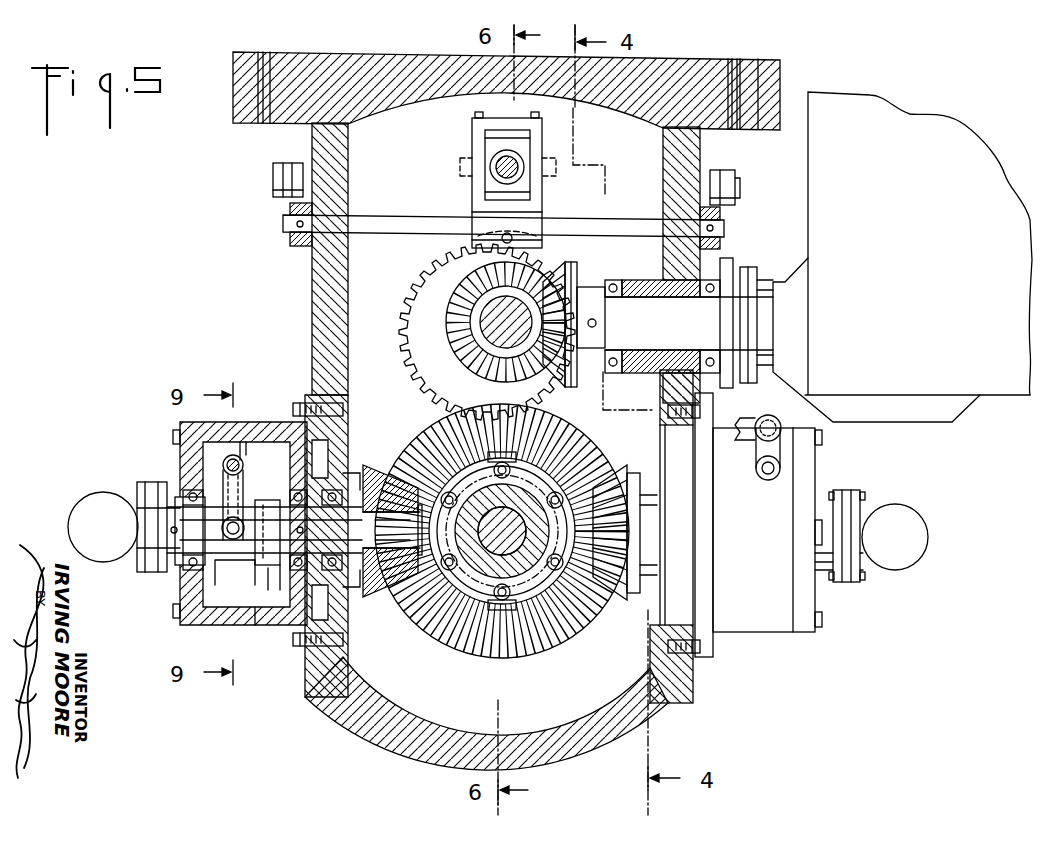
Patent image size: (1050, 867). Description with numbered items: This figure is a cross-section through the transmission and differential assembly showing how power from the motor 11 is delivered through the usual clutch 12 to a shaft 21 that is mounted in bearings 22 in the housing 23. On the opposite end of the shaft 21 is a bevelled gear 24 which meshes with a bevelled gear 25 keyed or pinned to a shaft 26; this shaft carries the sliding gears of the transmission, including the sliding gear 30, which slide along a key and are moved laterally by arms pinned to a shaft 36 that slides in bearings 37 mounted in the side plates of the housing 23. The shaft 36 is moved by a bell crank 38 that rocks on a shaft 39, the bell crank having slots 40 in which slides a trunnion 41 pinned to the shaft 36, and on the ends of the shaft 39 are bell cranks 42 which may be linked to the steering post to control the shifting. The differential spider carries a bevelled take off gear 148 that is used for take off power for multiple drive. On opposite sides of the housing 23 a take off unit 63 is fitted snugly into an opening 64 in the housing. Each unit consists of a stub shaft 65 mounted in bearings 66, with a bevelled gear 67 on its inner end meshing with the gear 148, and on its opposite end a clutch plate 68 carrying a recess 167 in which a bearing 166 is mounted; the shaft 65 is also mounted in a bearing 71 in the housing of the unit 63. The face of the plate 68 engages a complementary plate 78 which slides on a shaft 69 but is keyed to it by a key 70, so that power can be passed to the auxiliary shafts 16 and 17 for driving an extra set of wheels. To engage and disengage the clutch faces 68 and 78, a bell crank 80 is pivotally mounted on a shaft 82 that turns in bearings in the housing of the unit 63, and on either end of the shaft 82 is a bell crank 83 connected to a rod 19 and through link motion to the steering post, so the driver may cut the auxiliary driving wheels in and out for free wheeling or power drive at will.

The motor 11 is at (928, 216).
The clutch 12 is at (800, 268).
The auxiliary shaft 16 is at (90, 515).
The auxiliary drive shaft 17 is at (890, 556).
The rod 19 is at (752, 422).
The shaft 21 is at (680, 339).
The bearings 22 is at (614, 282).
The housing 23 is at (702, 160).
The bevelled gear 24 is at (560, 262).
The bevelled gear 25 is at (458, 290).
The shaft 26 is at (498, 320).
The sliding gear 30 is at (402, 330).
The shaft 36 is at (492, 168).
The bearings 37 is at (530, 185).
The bell crank 38 is at (472, 148).
The shaft 39 is at (378, 222).
The slots 40 is at (545, 133).
The trunnion 41 is at (556, 168).
The bell cranks 42 is at (272, 176).
The take off unit 63 is at (242, 420).
The opening 64 is at (335, 412).
The stub shaft 65 is at (350, 500).
The bearings 66 is at (322, 492).
The bevelled gear 67 is at (388, 605).
The clutch plate 68 is at (250, 572).
The shaft 69 is at (198, 566).
The key 70 is at (252, 496).
The bearing 71 is at (190, 497).
The complementary plate 78 is at (241, 442).
The bell crank 80 is at (232, 478).
The shaft 82 is at (225, 455).
The bell crank 83 is at (757, 445).
The bevelled take off gear 148 is at (566, 632).
The bearing 166 is at (285, 565).
The recess 167 is at (268, 622).